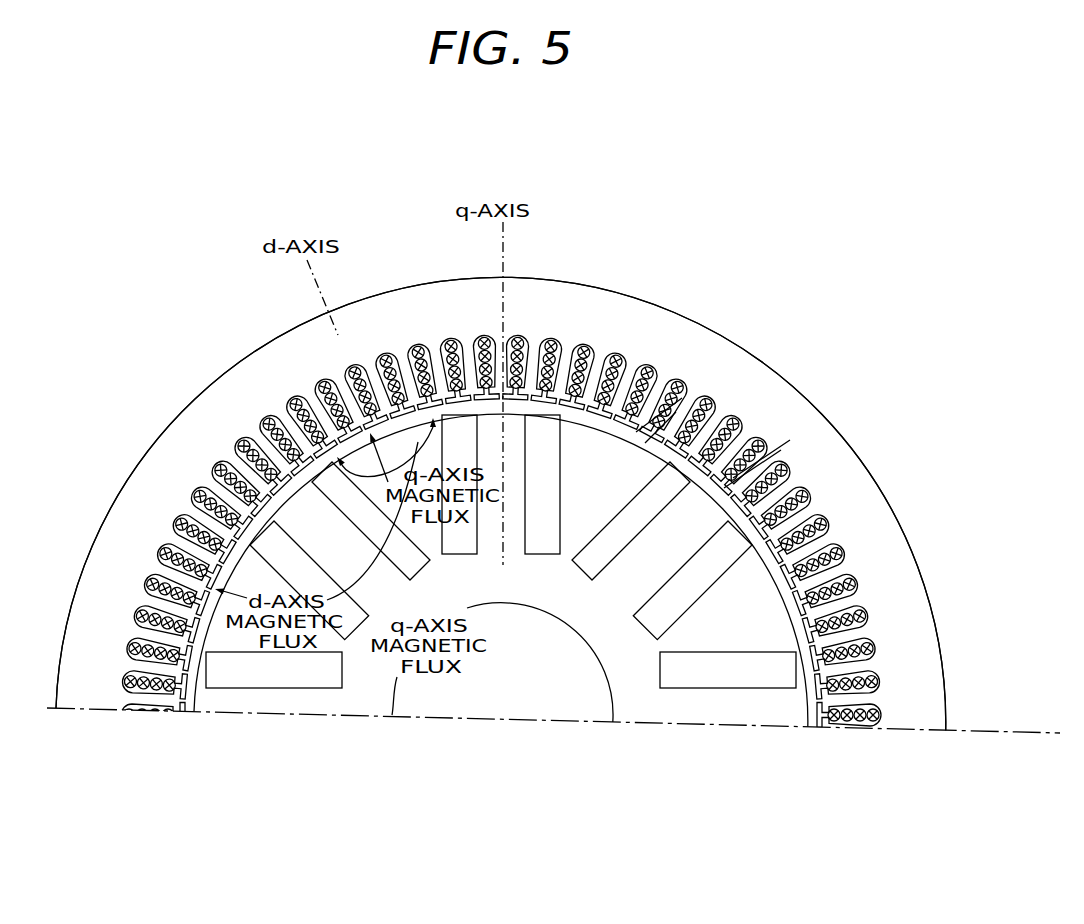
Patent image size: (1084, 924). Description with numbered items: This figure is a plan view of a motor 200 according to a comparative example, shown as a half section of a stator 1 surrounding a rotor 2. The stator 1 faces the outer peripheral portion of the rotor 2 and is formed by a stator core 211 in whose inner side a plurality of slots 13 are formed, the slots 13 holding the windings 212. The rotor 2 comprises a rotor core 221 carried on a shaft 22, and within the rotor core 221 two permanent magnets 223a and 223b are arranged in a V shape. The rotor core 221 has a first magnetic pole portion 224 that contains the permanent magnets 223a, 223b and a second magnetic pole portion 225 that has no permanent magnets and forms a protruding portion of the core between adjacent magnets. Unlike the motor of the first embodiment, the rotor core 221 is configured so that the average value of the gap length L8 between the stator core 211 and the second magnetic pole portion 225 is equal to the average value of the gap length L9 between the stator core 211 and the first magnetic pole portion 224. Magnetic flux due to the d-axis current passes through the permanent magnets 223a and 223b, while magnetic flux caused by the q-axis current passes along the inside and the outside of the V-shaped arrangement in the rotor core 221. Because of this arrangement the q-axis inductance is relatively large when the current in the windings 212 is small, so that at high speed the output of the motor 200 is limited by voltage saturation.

The stator 1 is at (764, 369).
The motor 200 is at (680, 286).
The stator core 211 is at (797, 403).
The windings 212 is at (780, 460).
The slots 13 is at (807, 488).
The rotor 2 is at (672, 706).
The shaft 22 is at (500, 718).
The rotor core 221 is at (358, 712).
The permanent magnet 223a is at (530, 556).
The permanent magnet 223b is at (600, 575).
The first magnetic pole portion 224 is at (417, 424).
The second magnetic pole portion 225 is at (519, 411).
The gap length L8 is at (716, 508).
The gap length L9 is at (634, 452).